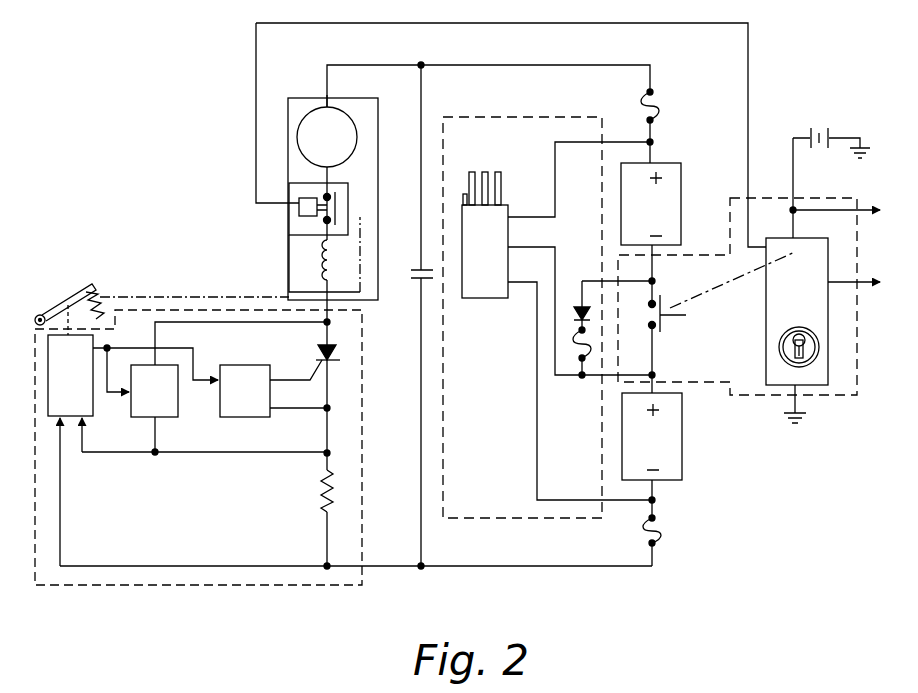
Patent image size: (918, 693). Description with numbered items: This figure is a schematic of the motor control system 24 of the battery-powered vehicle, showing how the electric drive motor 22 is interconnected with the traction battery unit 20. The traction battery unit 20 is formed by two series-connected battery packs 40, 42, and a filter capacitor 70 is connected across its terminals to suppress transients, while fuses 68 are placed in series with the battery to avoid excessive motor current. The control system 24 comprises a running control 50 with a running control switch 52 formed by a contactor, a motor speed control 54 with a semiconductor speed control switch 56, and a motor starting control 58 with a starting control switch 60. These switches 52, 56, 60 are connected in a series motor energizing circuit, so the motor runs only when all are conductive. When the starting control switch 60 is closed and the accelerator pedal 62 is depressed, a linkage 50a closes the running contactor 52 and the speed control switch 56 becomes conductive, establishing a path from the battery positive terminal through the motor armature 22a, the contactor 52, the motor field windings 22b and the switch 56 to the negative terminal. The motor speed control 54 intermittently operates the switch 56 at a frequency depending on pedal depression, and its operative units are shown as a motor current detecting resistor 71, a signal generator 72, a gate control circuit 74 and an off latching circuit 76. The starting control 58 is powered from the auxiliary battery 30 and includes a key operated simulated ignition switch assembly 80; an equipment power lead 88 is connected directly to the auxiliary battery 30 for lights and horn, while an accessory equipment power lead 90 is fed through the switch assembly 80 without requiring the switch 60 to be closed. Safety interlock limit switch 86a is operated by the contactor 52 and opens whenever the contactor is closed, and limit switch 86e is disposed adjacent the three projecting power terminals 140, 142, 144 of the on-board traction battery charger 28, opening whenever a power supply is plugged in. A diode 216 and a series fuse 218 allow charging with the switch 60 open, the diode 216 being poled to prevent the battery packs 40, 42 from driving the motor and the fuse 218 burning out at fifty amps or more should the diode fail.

The traction battery unit 20 is at (726, 431).
The electric drive motor 22 is at (286, 99).
The motor armature 22a is at (344, 112).
The motor field windings 22b is at (323, 262).
The motor control system 24 is at (194, 122).
The traction battery charger 28 is at (487, 521).
The auxiliary battery 30 is at (810, 130).
The battery pack 40 is at (683, 455).
The battery pack 42 is at (677, 188).
The running control 50 is at (363, 221).
The linkage 50a is at (232, 297).
The running control switch 52 is at (347, 212).
The motor speed control 54 is at (183, 592).
The semiconductor speed control switch 56 is at (322, 350).
The motor starting control 58 is at (826, 401).
The starting control switch 60 is at (663, 333).
The accelerator pedal 62 is at (63, 292).
The fuses 68 is at (655, 104).
The filter capacitor 70 is at (412, 270).
The motor current detecting resistor 71 is at (322, 492).
The signal generator 72 is at (94, 416).
The gate control circuit 74 is at (266, 418).
The off latching circuit 76 is at (160, 418).
The key operated simulated ignition switch assembly 80 is at (832, 350).
The limit switch 86a is at (300, 199).
The limit switch 86e is at (470, 212).
The equipment power lead 88 is at (825, 210).
The accessory equipment power lead 90 is at (845, 282).
The power terminal 140 is at (472, 172).
The power terminal 142 is at (486, 172).
The power terminal 144 is at (499, 173).
The diode 216 is at (577, 306).
The fuse 218 is at (592, 362).